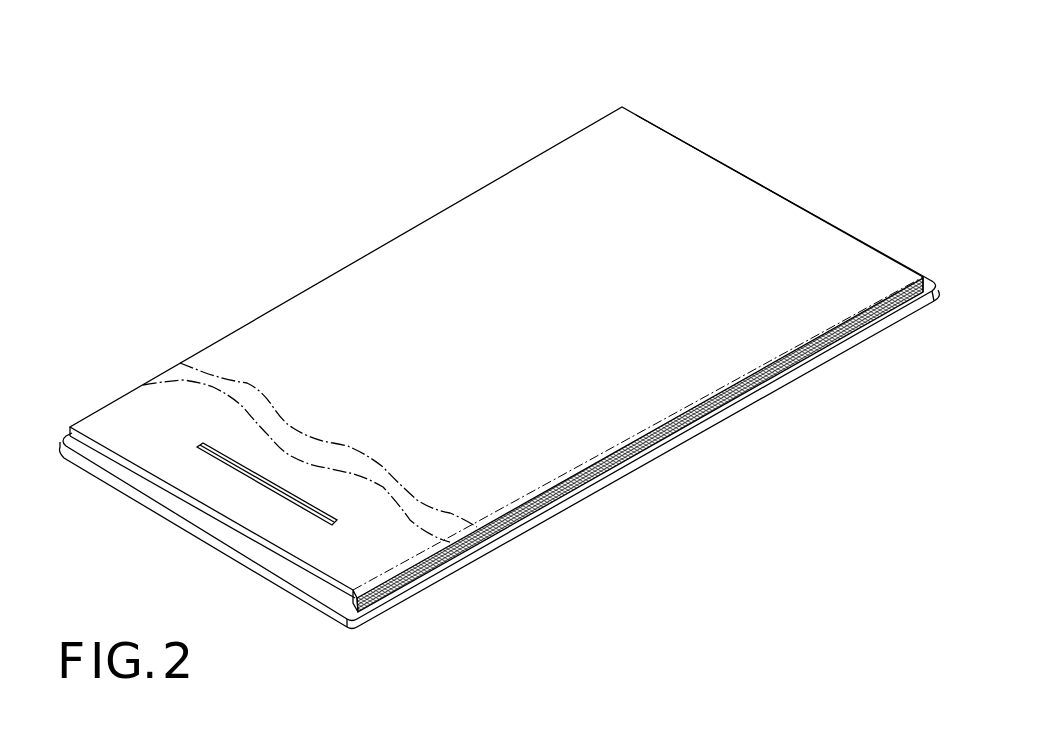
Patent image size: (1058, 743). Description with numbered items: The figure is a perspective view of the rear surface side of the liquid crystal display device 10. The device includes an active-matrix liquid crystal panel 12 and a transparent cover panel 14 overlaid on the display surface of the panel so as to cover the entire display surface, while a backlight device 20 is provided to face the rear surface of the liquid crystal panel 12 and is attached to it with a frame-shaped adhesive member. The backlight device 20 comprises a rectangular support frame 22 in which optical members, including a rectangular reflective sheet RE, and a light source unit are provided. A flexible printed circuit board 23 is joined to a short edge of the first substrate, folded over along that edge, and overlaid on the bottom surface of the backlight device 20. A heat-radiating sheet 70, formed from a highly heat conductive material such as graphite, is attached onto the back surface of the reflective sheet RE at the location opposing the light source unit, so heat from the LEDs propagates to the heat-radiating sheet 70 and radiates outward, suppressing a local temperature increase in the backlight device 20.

The liquid crystal display device 10 is at (400, 200).
The backlight device 20 is at (718, 188).
The support frame 22 is at (572, 490).
The reflective sheet RE is at (607, 143).
The liquid crystal panel 12 is at (763, 388).
The transparent cover panel 14 is at (702, 433).
The heat-radiating sheet 70 is at (177, 370).
The flexible printed circuit board 23 is at (330, 567).